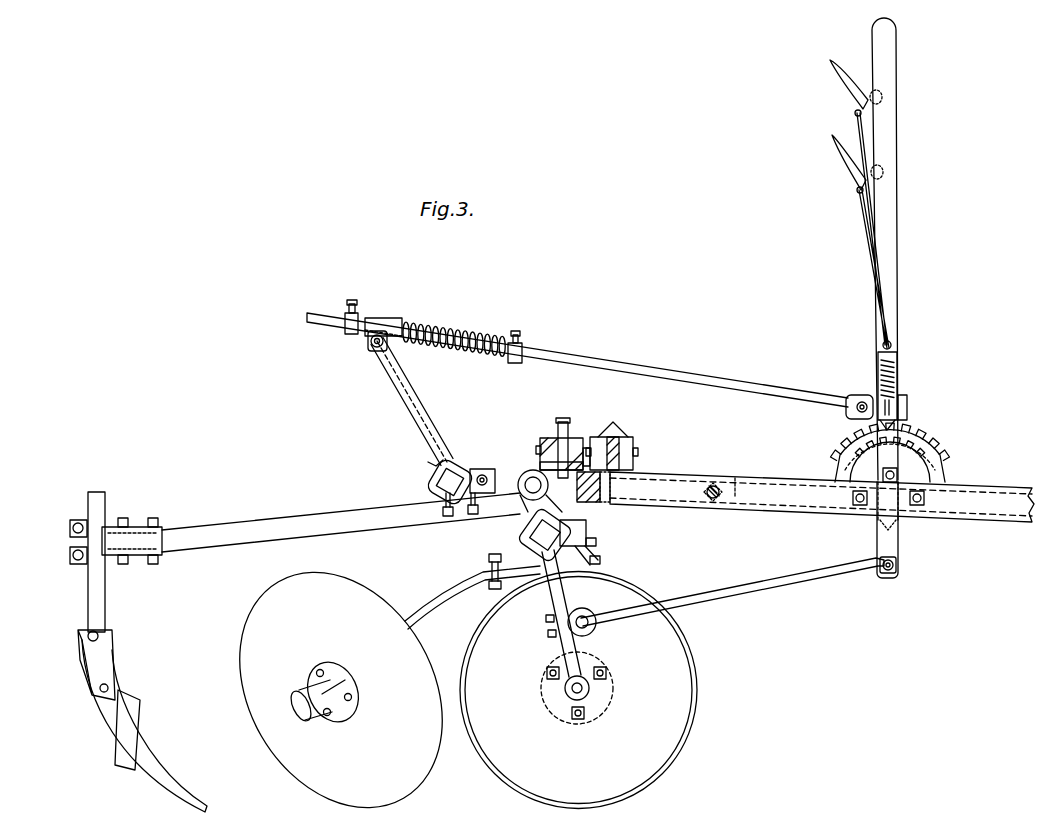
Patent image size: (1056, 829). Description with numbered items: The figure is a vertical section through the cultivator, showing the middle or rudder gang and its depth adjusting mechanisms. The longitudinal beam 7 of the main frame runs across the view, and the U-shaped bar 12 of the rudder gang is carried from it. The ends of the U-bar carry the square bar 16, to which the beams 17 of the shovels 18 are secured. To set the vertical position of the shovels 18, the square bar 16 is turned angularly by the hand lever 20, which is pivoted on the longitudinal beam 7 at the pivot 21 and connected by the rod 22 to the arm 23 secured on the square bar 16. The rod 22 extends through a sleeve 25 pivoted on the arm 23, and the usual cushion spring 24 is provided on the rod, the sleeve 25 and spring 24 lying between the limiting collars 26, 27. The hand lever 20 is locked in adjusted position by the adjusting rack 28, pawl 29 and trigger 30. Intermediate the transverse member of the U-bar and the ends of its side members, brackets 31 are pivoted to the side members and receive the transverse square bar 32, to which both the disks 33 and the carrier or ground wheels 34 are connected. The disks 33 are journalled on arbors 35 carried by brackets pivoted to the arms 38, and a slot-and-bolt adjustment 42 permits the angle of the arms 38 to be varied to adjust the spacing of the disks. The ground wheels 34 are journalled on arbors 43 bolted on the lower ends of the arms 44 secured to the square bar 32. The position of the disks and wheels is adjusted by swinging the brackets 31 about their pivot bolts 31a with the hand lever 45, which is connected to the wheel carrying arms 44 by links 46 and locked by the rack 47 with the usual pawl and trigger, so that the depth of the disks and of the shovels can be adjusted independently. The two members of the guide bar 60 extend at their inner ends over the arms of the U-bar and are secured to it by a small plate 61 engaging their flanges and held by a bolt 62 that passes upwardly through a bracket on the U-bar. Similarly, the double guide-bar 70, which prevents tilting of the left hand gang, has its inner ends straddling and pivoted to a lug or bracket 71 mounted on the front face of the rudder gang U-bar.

The longitudinal beam 7 is at (765, 494).
The U-shaped bar 12 is at (595, 505).
The square bar 16 is at (428, 473).
The beams 17 is at (262, 530).
The shovels 18 is at (165, 762).
The hand lever 20 is at (896, 68).
The pivot 21 is at (899, 523).
The rod 22 is at (594, 358).
The arm 23 is at (425, 420).
The cushion spring 24 is at (459, 338).
The sleeve 25 is at (398, 323).
The limiting collar 26 is at (345, 314).
The limiting collar 27 is at (523, 346).
The adjusting rack 28 is at (937, 438).
The pawl 29 is at (893, 351).
The trigger 30 is at (852, 89).
The brackets 31 is at (526, 500).
The pivot bolts 31a is at (528, 473).
The transverse square bar 32 is at (571, 524).
The disks 33 is at (255, 680).
The carrier or ground wheels 34 is at (694, 672).
The arbors 35 is at (295, 706).
The arms 38 is at (462, 600).
The slot-and-bolt adjustment 42 is at (489, 561).
The arbors 43 is at (590, 694).
The arms 44 is at (552, 602).
The hand lever 45 is at (899, 546).
The links 46 is at (693, 600).
The rack 47 is at (913, 461).
The guide bar 60 is at (550, 437).
The plate 61 is at (592, 441).
The bolt 62 is at (562, 421).
The double guide-bar 70 is at (600, 436).
The lug or bracket 71 is at (625, 440).